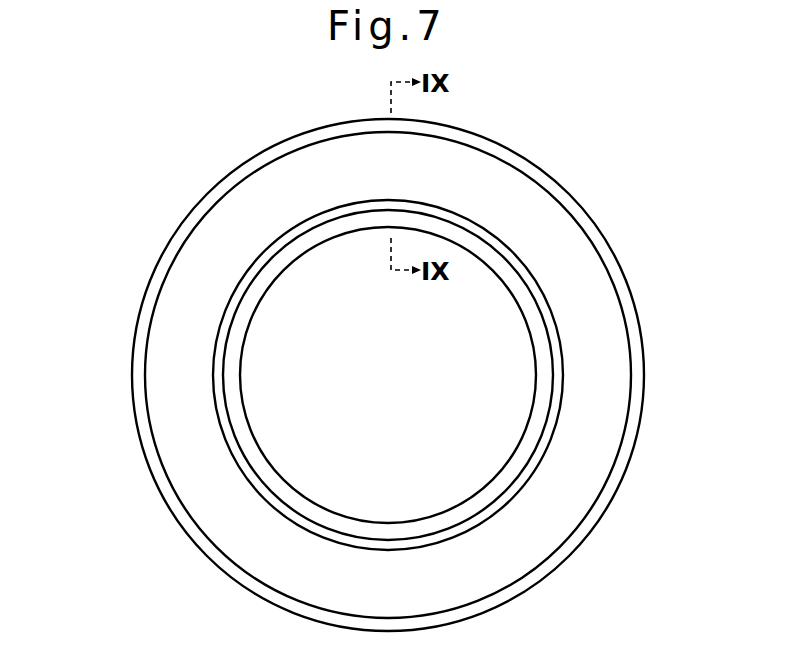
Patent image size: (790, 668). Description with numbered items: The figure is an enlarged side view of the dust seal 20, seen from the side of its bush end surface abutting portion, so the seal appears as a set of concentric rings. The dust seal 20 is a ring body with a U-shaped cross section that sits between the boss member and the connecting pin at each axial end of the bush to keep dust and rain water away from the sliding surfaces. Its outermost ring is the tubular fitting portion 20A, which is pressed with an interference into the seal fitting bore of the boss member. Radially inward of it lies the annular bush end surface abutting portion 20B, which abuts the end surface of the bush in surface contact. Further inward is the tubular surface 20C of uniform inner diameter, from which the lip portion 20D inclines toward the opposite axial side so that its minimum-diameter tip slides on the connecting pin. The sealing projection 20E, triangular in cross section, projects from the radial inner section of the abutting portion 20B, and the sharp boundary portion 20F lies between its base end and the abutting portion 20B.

The dust seal 20 is at (212, 173).
The tubular fitting portion 20A is at (153, 288).
The bush end surface abutting portion 20B is at (563, 263).
The tubular surface 20C is at (238, 427).
The lip portion 20D is at (303, 507).
The sealing projection 20E is at (560, 380).
The boundary portion 20F is at (515, 498).